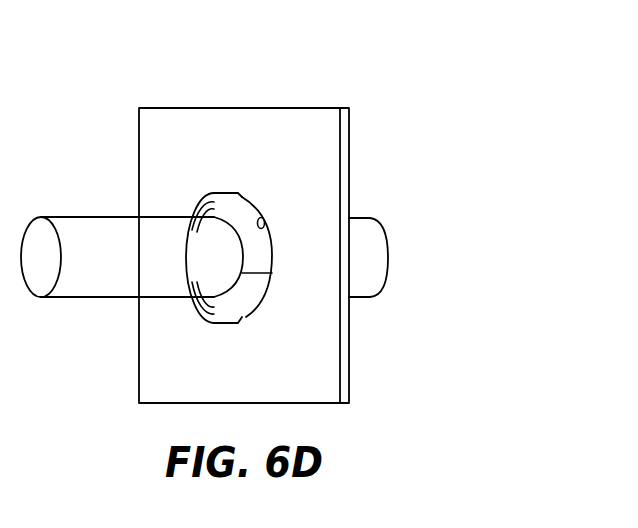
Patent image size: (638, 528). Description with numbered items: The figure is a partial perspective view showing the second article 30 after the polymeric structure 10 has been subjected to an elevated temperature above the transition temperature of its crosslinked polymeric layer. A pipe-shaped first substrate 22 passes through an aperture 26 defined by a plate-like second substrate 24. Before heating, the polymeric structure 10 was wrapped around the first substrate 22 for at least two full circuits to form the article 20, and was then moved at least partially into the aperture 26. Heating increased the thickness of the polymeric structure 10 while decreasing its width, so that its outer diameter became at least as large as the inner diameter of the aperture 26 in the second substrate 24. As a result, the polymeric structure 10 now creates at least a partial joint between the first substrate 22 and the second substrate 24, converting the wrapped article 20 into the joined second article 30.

The polymeric structure 10 is at (250, 297).
The article 20 is at (211, 180).
The first substrate 22 is at (90, 232).
The second substrate 24 is at (162, 153).
The aperture 26 is at (262, 218).
The second article 30 is at (319, 89).